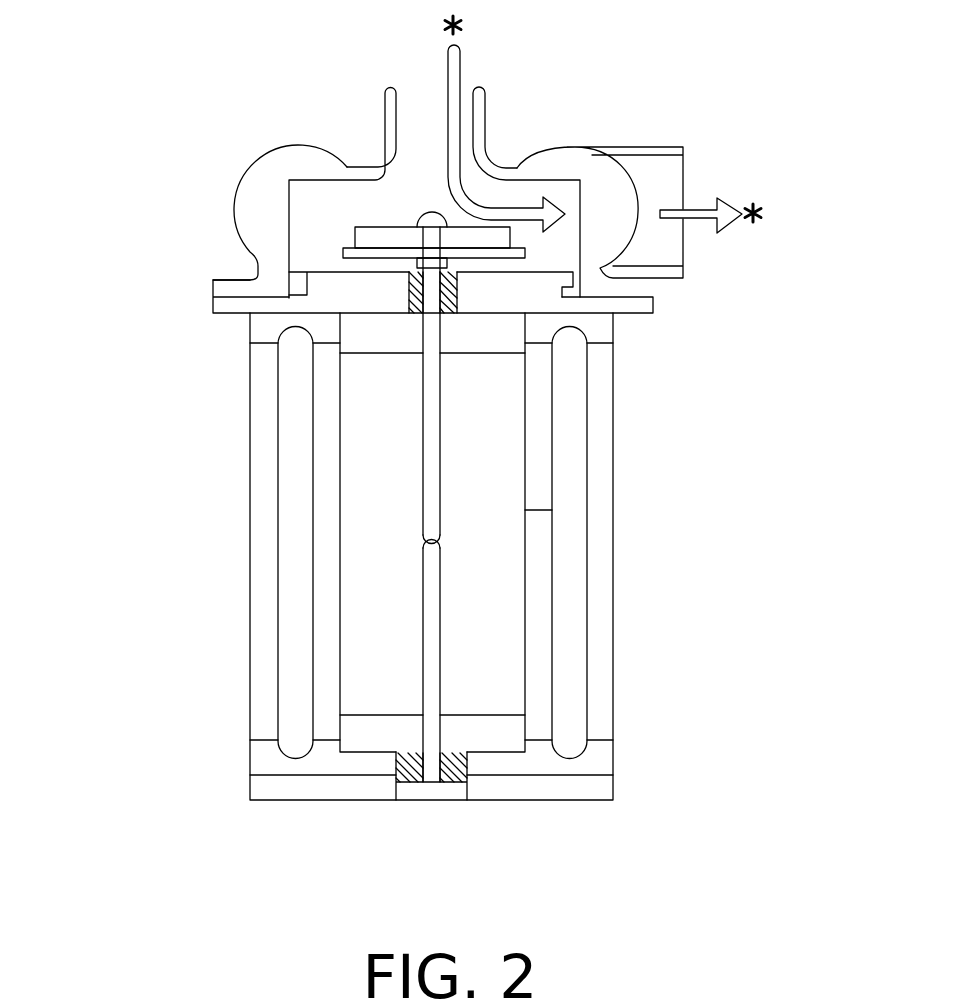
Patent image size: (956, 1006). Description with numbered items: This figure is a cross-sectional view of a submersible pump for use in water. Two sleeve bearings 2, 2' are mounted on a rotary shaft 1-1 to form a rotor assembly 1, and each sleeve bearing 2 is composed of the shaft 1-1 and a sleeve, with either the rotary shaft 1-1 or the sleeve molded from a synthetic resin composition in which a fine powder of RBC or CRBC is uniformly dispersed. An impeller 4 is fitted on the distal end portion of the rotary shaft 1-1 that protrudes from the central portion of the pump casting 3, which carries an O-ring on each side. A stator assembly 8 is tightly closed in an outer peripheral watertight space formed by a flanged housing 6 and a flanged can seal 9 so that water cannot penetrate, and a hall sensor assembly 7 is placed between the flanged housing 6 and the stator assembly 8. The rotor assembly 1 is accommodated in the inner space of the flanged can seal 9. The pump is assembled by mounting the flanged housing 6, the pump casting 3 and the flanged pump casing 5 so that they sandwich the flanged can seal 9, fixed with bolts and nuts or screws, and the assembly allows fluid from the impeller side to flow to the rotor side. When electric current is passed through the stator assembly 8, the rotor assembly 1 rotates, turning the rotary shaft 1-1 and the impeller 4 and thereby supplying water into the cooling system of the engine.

The rotor assembly 1 is at (495, 433).
The rotary shaft 1-1 is at (425, 482).
The sleeve bearing 2 is at (305, 376).
The sleeve bearing 2' is at (440, 834).
The pump casting 3 is at (335, 292).
The impeller 4 is at (392, 237).
The flanged pump casing 5 is at (272, 185).
The flanged housing 6 is at (613, 675).
The hall sensor assembly 7 is at (592, 778).
The stator assembly 8 is at (600, 588).
The flanged can seal 9 is at (527, 510).